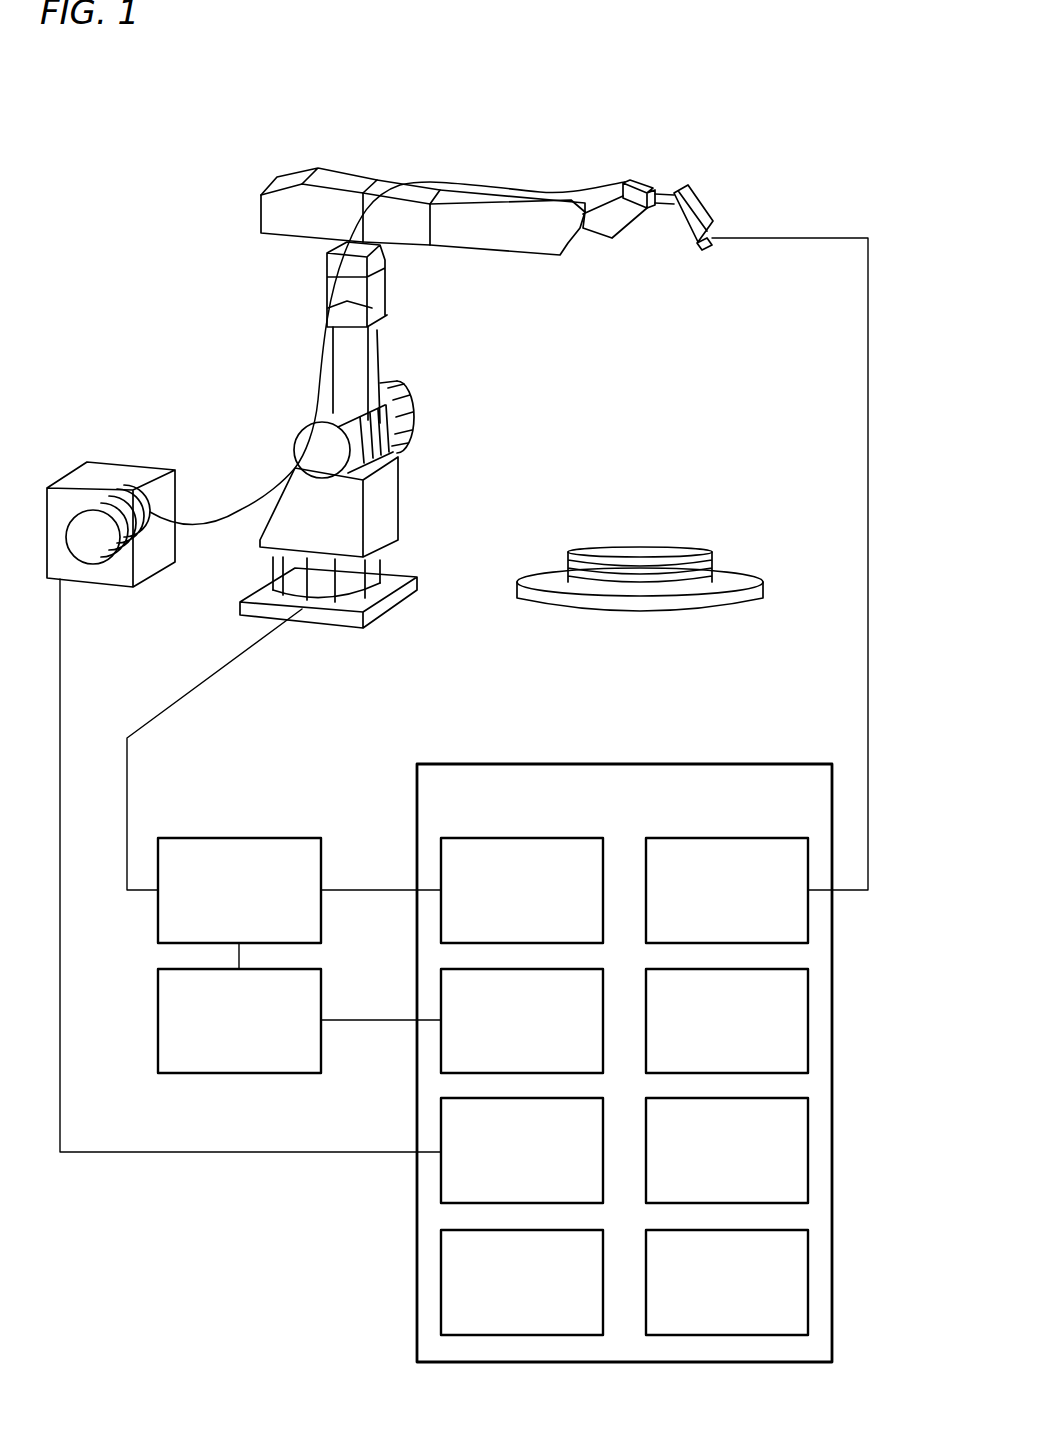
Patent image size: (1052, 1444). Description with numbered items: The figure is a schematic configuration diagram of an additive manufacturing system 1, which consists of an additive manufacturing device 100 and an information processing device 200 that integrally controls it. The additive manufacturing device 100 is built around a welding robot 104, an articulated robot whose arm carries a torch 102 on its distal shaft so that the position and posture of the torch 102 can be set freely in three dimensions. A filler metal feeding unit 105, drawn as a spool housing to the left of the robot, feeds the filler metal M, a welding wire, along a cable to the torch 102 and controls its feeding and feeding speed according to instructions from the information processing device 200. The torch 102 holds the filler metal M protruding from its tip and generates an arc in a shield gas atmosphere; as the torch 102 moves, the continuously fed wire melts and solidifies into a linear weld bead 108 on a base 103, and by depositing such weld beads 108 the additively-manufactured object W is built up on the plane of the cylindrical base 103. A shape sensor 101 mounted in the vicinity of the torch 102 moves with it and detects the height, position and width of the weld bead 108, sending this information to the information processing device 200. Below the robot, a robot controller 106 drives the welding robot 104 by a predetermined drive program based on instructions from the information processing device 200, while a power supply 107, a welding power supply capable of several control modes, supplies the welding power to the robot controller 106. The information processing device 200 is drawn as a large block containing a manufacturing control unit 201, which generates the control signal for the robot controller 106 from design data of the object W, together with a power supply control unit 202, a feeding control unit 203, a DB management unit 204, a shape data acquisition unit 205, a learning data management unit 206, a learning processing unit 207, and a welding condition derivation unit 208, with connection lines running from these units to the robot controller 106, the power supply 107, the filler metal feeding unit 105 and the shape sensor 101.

The additive manufacturing system 1 is at (748, 148).
The additive manufacturing device 100 is at (278, 139).
The shape sensor 101 is at (718, 238).
The torch 102 is at (700, 246).
The base 103 is at (748, 577).
The welding robot 104 is at (345, 213).
The filler metal feeding unit 105 is at (120, 468).
The robot controller 106 is at (238, 836).
The power supply 107 is at (322, 991).
The weld bead 108 is at (578, 549).
The filler metal M is at (563, 190).
The additively-manufactured object W is at (685, 484).
The information processing device 200 is at (630, 764).
The manufacturing control unit 201 is at (441, 857).
The power supply control unit 202 is at (441, 1050).
The feeding control unit 203 is at (441, 1130).
The DB management unit 204 is at (441, 1278).
The shape data acquisition unit 205 is at (808, 918).
The learning data management unit 206 is at (808, 1018).
The learning processing unit 207 is at (808, 1148).
The welding condition derivation unit 208 is at (808, 1278).